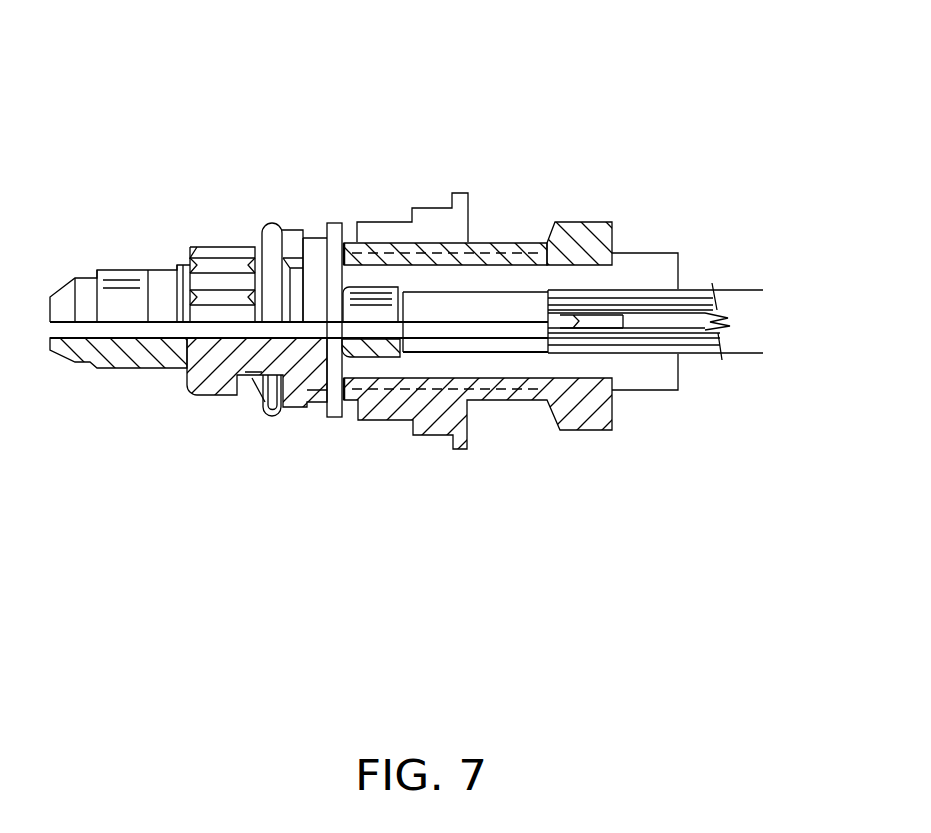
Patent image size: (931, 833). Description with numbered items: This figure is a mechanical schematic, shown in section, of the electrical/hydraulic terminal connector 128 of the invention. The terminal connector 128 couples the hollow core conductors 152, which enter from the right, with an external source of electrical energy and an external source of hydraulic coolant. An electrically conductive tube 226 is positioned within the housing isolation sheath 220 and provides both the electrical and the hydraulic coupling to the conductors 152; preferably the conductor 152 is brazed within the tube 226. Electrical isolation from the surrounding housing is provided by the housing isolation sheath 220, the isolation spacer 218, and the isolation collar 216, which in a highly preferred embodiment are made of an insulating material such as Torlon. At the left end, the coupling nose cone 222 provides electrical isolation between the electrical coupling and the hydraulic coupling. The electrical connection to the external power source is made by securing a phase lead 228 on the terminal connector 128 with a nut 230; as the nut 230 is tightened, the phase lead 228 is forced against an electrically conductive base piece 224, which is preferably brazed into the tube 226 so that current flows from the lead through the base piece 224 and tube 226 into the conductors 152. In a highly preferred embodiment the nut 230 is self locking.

The electrical/hydraulic terminal connector 128 is at (378, 167).
The hollow core conductors 152 is at (732, 290).
The isolation collar 216 is at (435, 215).
The isolation spacer 218 is at (468, 215).
The housing isolation sheath 220 is at (597, 223).
The coupling nose cone 222 is at (130, 357).
The base piece 224 is at (313, 413).
The electrically conductive tube 226 is at (509, 368).
The phase lead 228 is at (287, 407).
The nut 230 is at (237, 390).